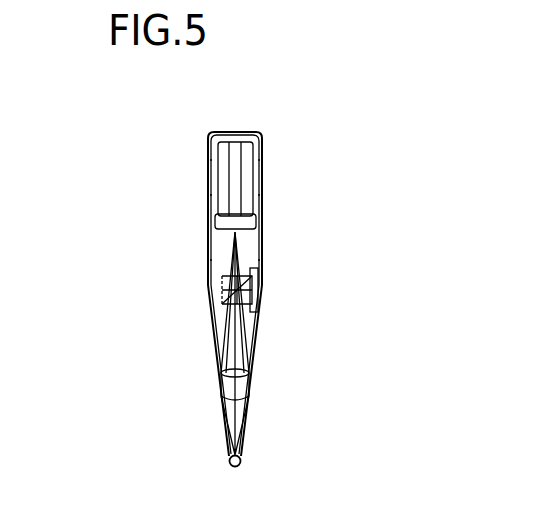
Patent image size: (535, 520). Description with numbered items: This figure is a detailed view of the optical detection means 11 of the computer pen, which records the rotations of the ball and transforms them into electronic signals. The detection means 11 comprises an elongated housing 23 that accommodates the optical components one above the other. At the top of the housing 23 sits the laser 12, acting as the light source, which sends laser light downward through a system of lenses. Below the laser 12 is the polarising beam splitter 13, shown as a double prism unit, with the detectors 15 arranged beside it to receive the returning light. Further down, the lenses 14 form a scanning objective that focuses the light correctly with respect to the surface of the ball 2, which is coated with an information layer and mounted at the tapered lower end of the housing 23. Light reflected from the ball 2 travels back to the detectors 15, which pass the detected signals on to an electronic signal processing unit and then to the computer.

The optical detection means 11 is at (170, 267).
The ball 2 is at (242, 462).
The laser 12 is at (238, 204).
The polarising beam splitter 13 is at (233, 304).
The detectors 15 is at (255, 291).
The lenses 14 is at (238, 384).
The housing 23 is at (208, 157).